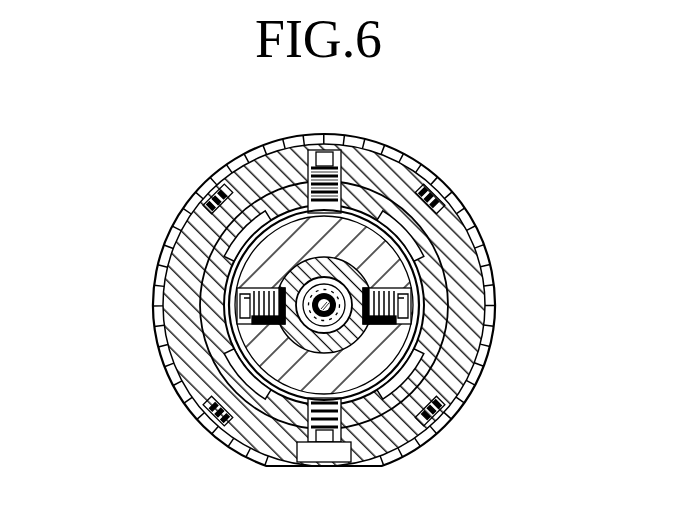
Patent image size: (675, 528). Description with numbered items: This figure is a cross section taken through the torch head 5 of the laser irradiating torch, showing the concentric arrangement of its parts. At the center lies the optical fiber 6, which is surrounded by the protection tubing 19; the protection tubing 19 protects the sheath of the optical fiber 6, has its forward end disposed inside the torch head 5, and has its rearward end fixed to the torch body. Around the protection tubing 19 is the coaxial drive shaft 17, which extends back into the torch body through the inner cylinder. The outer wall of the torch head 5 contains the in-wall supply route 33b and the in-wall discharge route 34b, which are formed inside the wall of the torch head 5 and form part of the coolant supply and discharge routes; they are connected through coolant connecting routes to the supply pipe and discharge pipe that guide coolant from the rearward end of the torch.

The torch head 5 is at (497, 204).
The optical fiber 6 is at (412, 265).
The drive shaft 17 is at (258, 420).
The protection tubing 19 is at (461, 400).
The in-wall supply route 33b is at (437, 345).
The in-wall discharge route 34b is at (167, 343).